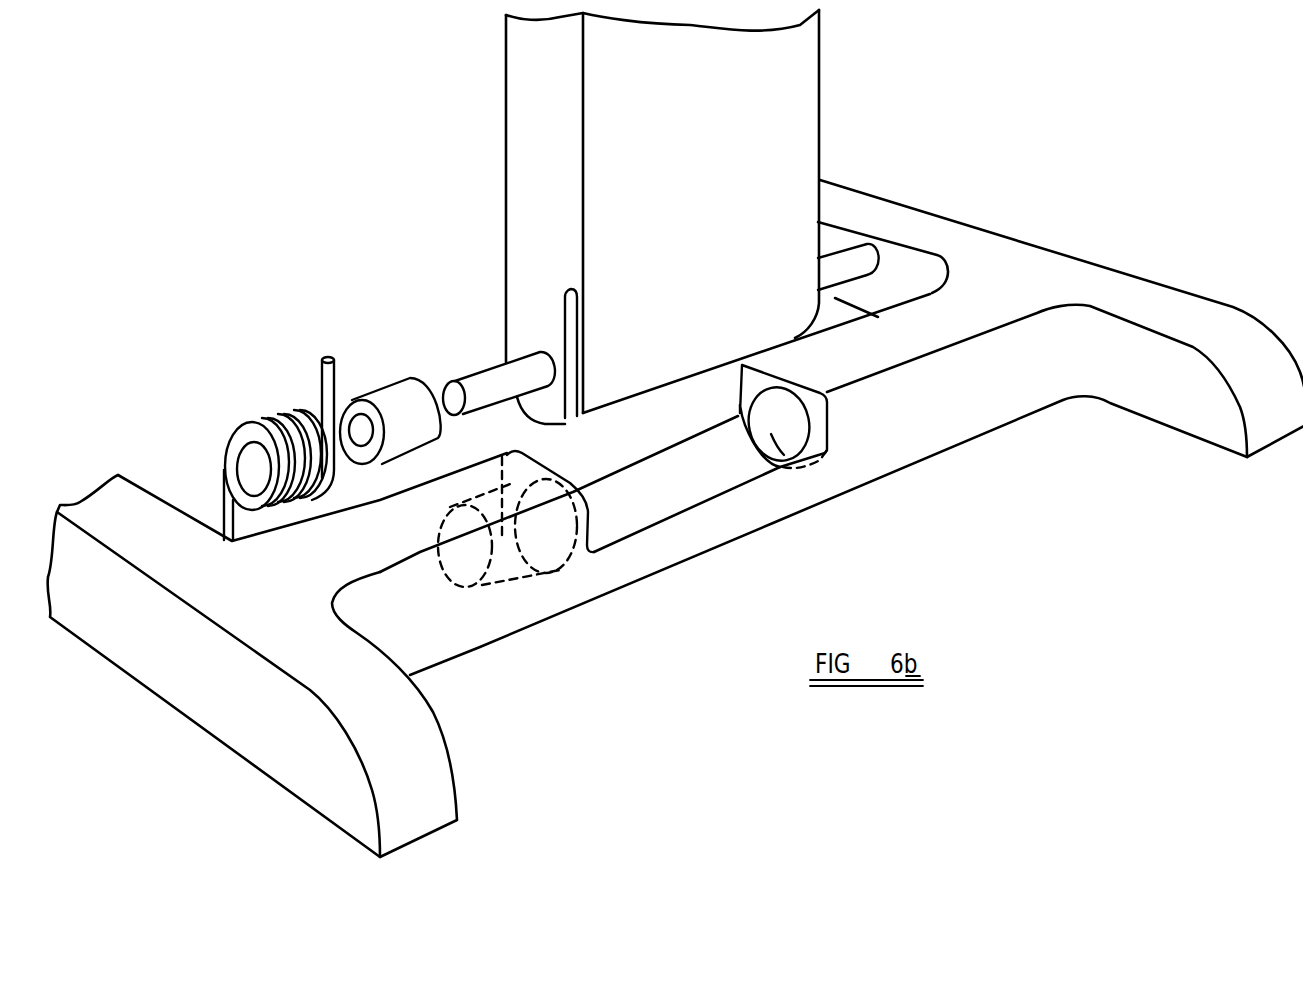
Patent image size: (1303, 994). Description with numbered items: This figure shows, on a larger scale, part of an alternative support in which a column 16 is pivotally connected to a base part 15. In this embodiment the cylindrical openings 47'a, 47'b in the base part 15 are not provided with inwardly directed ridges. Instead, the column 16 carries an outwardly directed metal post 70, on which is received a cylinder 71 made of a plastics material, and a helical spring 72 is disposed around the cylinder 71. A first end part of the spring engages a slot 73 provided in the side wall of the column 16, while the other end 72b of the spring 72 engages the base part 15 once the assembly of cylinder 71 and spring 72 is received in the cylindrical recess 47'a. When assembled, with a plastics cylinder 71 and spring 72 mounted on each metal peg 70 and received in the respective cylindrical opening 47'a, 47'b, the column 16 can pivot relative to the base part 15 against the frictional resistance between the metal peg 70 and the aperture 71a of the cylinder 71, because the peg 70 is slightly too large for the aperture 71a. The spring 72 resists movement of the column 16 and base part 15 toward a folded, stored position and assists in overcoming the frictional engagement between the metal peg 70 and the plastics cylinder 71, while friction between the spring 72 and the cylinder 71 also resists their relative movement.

The base part 15 is at (215, 703).
The column 16 is at (520, 143).
The metal post 70 is at (487, 380).
The cylinder 71 is at (400, 390).
The aperture 71a is at (355, 420).
The helical spring 72 is at (280, 420).
The other end of the spring 72b is at (322, 378).
The slot 73 is at (567, 315).
The cylindrical opening 47'a is at (535, 565).
The cylindrical opening 47'b is at (787, 476).